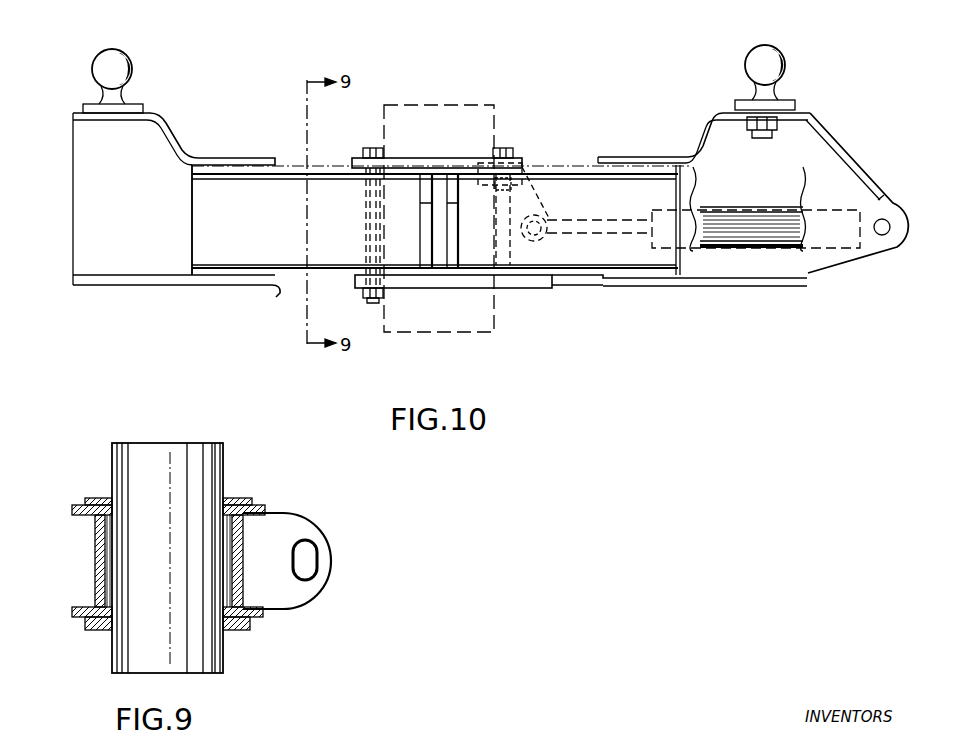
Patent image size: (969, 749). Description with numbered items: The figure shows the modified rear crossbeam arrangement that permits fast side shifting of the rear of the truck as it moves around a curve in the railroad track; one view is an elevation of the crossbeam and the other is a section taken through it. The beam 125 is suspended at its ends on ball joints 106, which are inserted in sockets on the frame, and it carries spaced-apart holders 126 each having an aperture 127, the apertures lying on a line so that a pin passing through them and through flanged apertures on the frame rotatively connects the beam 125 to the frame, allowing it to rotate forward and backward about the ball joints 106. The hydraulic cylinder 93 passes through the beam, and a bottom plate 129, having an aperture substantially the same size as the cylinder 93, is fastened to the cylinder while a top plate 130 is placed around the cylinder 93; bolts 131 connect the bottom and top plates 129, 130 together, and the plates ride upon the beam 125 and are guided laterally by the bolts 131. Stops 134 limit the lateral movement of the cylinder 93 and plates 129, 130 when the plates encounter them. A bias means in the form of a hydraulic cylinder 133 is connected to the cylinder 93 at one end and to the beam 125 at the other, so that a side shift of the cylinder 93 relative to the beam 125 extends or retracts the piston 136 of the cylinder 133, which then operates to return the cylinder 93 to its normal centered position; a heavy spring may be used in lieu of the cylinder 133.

In FIG. 9, the hydraulic cylinder 93 is at (112, 448).
In FIG. 10, the ball joints 106 is at (112, 50).
In FIG. 10, the beam 125 is at (556, 152).
In FIG. 9, the beam 125 is at (97, 537).
In FIG. 10, the holders 126 is at (452, 187).
In FIG. 9, the holders 126 is at (337, 563).
In FIG. 10, the aperture 127 is at (420, 233).
In FIG. 9, the aperture 127 is at (313, 550).
In FIG. 9, the bottom plate 129 is at (105, 630).
In FIG. 9, the top plate 130 is at (95, 500).
In FIG. 10, the bolts 131 is at (500, 148).
In FIG. 10, the hydraulic cylinder 133 is at (758, 249).
In FIG. 10, the stops 134 is at (274, 158).
In FIG. 10, the piston 136 is at (580, 230).